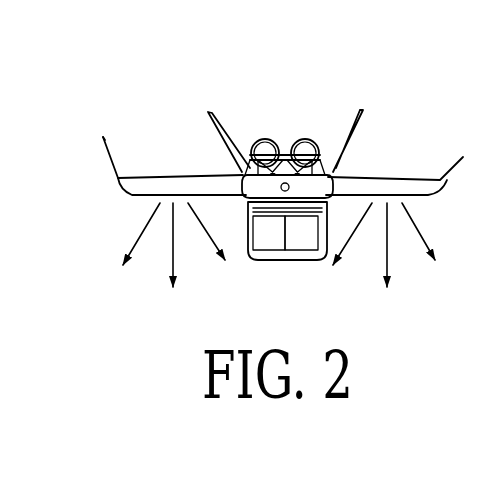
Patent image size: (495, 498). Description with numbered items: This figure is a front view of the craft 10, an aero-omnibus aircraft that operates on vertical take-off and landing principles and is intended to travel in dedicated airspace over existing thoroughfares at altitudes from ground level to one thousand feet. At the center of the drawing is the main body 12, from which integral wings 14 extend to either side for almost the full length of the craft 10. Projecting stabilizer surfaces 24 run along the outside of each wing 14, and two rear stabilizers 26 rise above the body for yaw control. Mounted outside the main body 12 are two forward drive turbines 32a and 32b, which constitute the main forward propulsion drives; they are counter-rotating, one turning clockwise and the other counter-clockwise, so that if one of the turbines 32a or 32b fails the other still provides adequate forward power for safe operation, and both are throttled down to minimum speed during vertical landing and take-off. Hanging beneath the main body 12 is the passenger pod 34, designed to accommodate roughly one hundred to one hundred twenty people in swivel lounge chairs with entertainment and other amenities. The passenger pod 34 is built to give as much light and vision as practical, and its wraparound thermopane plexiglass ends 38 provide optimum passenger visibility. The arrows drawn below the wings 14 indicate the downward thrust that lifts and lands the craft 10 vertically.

The craft 10 is at (153, 122).
The main body 12 is at (328, 157).
The wing 14 is at (370, 176).
The projecting stabilizer surface 24 is at (108, 152).
The rear stabilizer 26 is at (213, 133).
The forward drive turbine 32a is at (257, 140).
The forward drive turbine 32b is at (308, 138).
The passenger pod 34 is at (268, 253).
The wraparound thermopane plexiglass end 38 is at (298, 235).